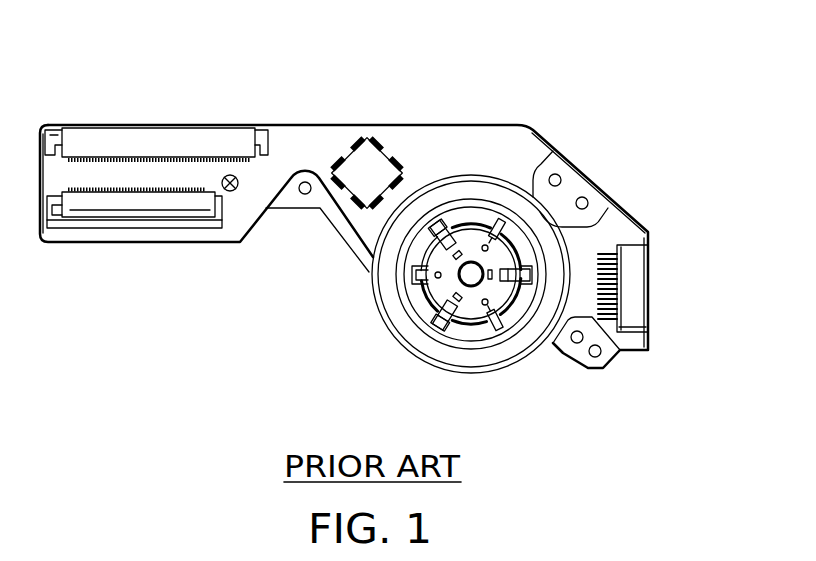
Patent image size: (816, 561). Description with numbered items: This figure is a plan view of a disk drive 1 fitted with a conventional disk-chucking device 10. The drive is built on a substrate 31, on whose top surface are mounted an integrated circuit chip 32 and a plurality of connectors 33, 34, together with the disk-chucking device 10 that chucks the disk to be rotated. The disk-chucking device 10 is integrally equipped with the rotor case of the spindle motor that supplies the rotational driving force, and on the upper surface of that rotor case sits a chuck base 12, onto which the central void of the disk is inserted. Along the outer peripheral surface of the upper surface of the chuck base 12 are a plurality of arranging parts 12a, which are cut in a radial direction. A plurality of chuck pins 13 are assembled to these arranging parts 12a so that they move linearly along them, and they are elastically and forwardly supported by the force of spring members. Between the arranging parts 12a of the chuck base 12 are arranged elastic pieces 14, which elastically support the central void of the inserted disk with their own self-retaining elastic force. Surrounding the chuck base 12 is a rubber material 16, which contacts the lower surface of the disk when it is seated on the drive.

The disk drive 1 is at (690, 88).
The disk-chucking device 10 is at (350, 293).
The chuck base 12 is at (432, 293).
The arranging parts 12a is at (449, 317).
The chuck pins 13 is at (447, 324).
The elastic pieces 14 is at (500, 319).
The rubber material 16 is at (513, 197).
The substrate 31 is at (483, 147).
The integrated circuit chip 32 is at (377, 167).
The connector 33 is at (165, 203).
The connector 34 is at (637, 257).